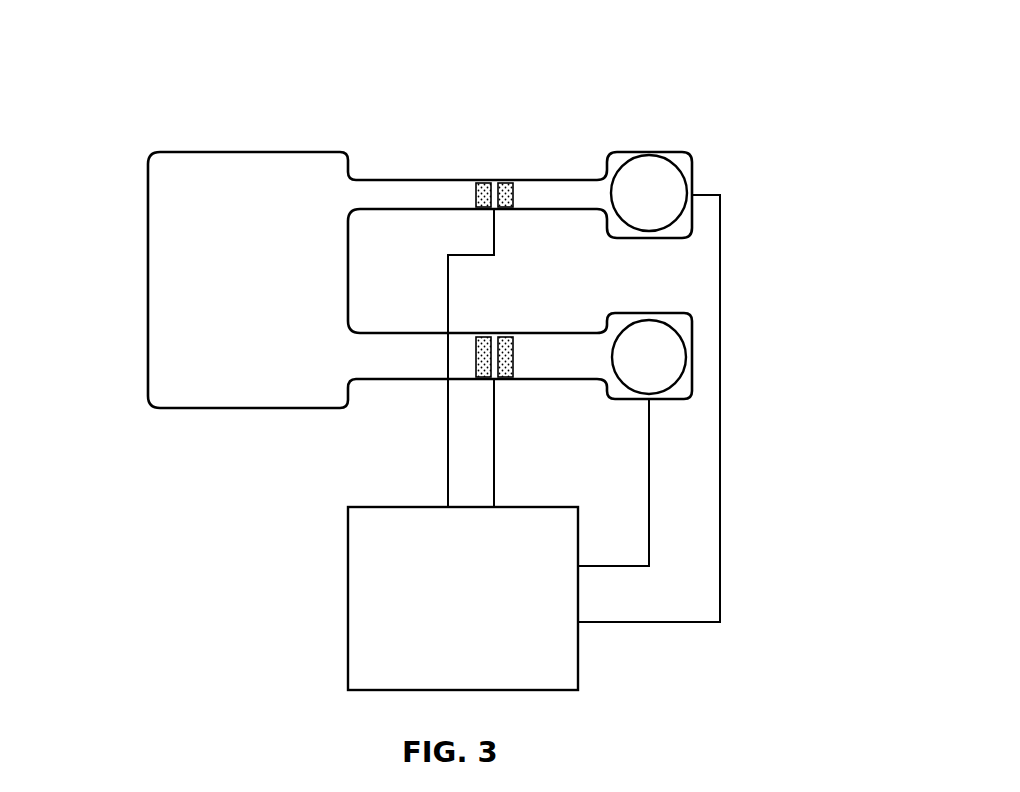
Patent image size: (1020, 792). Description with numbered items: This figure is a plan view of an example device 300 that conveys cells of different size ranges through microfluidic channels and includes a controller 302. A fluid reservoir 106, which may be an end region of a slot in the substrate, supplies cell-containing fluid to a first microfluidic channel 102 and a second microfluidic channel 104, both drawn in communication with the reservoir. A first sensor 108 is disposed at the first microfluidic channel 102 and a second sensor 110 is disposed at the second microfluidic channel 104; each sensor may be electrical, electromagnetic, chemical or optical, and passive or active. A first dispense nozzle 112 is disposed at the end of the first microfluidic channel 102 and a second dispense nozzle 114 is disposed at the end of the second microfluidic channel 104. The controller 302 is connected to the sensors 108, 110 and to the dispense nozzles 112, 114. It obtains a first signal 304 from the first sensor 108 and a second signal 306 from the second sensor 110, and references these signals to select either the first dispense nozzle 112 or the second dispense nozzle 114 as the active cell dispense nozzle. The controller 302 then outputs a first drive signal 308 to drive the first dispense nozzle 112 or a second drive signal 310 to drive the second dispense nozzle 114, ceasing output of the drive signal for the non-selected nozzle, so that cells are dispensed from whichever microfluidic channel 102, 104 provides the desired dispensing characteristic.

The device 300 is at (120, 80).
The first microfluidic channel 102 is at (435, 180).
The second microfluidic channel 104 is at (412, 380).
The fluid reservoir 106 is at (235, 193).
The first sensor 108 is at (493, 180).
The second sensor 110 is at (502, 380).
The first dispense nozzle 112 is at (650, 147).
The second dispense nozzle 114 is at (670, 333).
The controller 302 is at (463, 598).
The first signal 304 is at (450, 358).
The second signal 306 is at (515, 443).
The first drive signal 308 is at (649, 408).
The second drive signal 310 is at (613, 482).